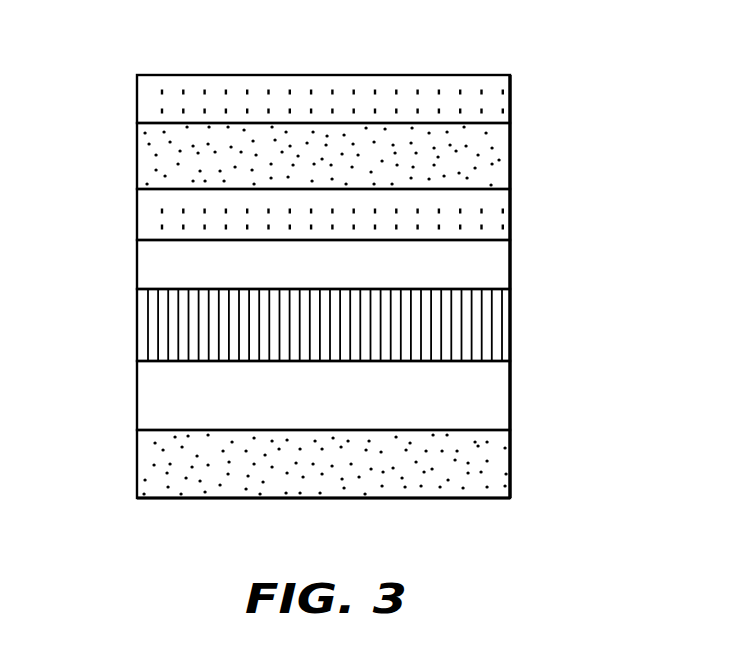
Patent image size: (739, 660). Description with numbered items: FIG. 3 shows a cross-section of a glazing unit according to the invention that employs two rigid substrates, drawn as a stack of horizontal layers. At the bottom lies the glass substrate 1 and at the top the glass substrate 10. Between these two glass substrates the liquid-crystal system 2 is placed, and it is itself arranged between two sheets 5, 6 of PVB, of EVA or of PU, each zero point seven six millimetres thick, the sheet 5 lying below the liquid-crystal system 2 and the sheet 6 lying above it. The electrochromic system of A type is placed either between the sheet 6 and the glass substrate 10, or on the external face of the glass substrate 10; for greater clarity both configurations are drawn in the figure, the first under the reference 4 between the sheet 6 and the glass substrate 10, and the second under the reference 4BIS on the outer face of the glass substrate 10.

The glass substrate 1 is at (143, 475).
The liquid-crystal system 2 is at (143, 321).
The electrochromic system 4 is at (497, 218).
The electrochromic system 4BIS is at (498, 102).
The sheet of PVB, EVA or PU 5 is at (143, 397).
The sheet of PVB, EVA or PU 6 is at (143, 263).
The glass substrate 10 is at (138, 154).